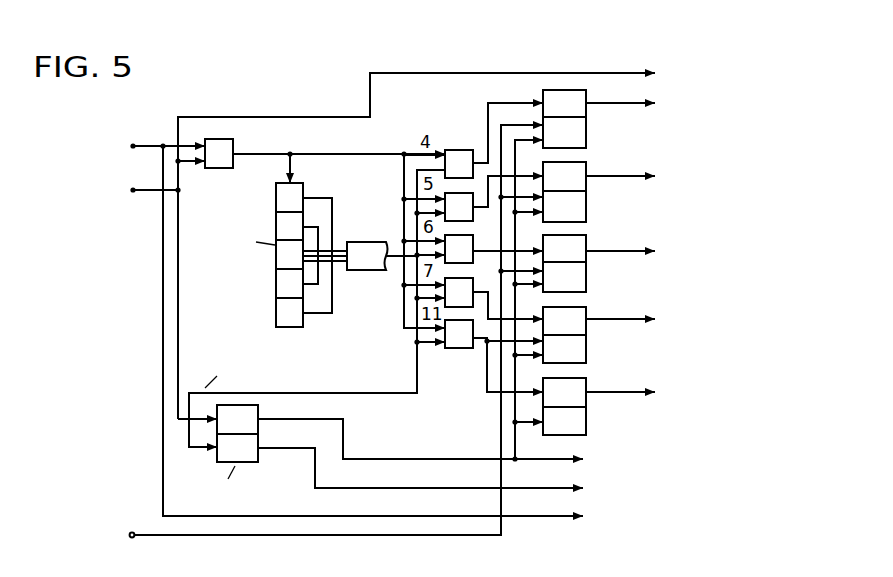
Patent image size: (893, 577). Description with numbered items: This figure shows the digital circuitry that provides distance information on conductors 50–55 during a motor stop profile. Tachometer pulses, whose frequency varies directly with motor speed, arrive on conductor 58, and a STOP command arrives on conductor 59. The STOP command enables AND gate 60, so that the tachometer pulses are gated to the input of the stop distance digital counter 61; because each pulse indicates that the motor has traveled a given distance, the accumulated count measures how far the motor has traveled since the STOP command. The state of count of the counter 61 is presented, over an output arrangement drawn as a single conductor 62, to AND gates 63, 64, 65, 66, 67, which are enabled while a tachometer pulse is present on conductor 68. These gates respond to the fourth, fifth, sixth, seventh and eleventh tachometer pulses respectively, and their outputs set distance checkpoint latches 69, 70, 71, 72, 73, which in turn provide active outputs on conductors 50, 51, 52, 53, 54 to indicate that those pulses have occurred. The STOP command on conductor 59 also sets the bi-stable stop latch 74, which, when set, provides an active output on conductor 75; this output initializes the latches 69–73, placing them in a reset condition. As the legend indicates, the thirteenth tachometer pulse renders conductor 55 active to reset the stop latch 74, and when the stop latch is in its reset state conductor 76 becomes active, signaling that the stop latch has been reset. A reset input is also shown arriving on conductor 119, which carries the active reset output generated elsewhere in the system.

The conductor 50 is at (607, 106).
The conductor 51 is at (607, 179).
The conductor 52 is at (608, 253).
The conductor 53 is at (608, 321).
The conductor 54 is at (608, 395).
The conductor 55 is at (388, 394).
The conductor 58 is at (143, 144).
The conductor 59 is at (150, 193).
The AND gate 60 is at (235, 143).
The stop distance digital counter 61 is at (275, 293).
The conductor 62 is at (396, 252).
The AND gate 63 is at (451, 148).
The AND gate 64 is at (403, 202).
The AND gate 65 is at (471, 262).
The AND gate 66 is at (403, 291).
The AND gate 67 is at (462, 349).
The conductor 68 is at (318, 154).
The distance checkpoint latch 69 is at (589, 97).
The distance checkpoint latch 70 is at (589, 167).
The distance checkpoint latch 71 is at (589, 238).
The distance checkpoint latch 72 is at (589, 311).
The distance checkpoint latch 73 is at (589, 381).
The bi-stable stop latch 74 is at (259, 409).
The conductor 75 is at (550, 460).
The conductor 76 is at (550, 489).
The conductor 119 is at (355, 539).